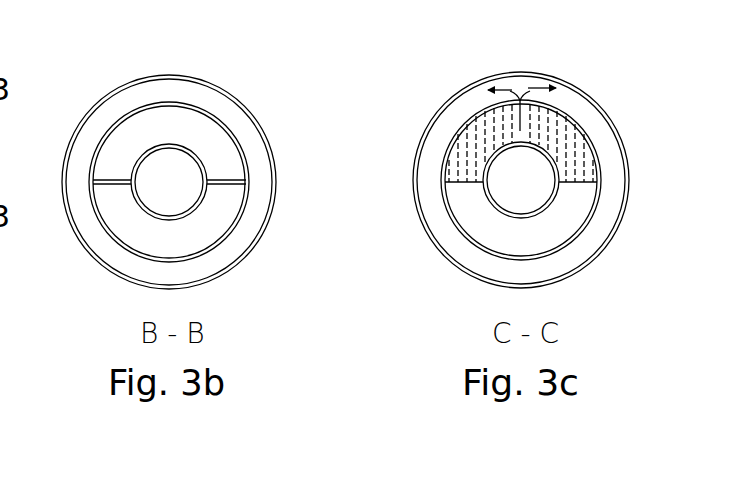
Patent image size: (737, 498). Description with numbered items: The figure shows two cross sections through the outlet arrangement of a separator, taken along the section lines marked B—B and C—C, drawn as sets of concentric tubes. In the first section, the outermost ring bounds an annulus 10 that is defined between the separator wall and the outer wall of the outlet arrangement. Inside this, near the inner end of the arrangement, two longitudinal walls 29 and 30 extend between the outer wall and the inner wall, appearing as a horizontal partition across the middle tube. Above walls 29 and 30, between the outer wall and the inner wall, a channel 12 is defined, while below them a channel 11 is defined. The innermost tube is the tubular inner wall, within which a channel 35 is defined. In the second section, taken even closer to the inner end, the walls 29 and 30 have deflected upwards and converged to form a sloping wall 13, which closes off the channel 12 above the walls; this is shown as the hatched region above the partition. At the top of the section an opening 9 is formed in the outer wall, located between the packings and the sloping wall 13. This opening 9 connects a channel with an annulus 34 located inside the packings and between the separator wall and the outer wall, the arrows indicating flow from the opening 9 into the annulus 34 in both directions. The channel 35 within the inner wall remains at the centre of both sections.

In FIG. 3C, the opening 9 is at (503, 103).
In FIG. 3B, the annulus 10 is at (208, 103).
In FIG. 3B, the channel 11 is at (200, 232).
In FIG. 3B, the channel 12 is at (222, 158).
In FIG. 3C, the sloping wall 13 is at (592, 147).
In FIG. 3B, the longitudinal wall 29 is at (248, 176).
In FIG. 3B, the longitudinal wall 30 is at (93, 178).
In FIG. 3C, the annulus 34 is at (566, 100).
In FIG. 3B, the channel 35 is at (165, 188).
In FIG. 3C, the channel 35 is at (515, 185).